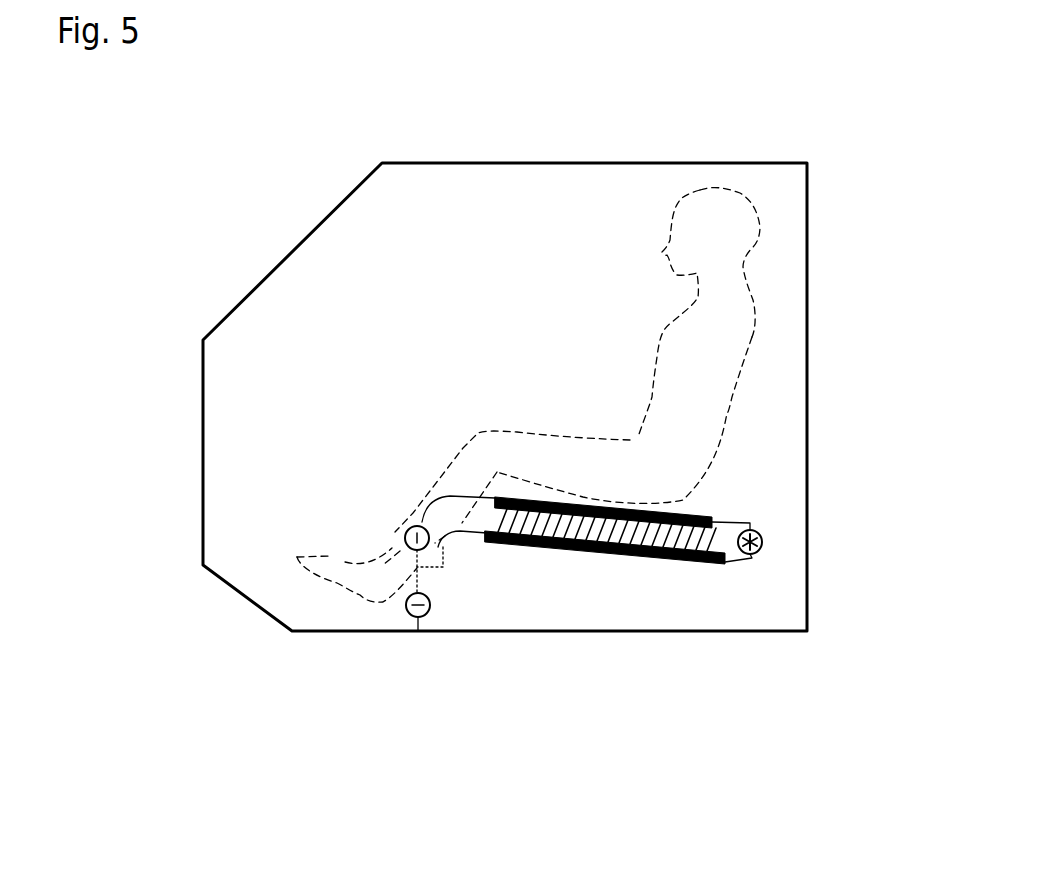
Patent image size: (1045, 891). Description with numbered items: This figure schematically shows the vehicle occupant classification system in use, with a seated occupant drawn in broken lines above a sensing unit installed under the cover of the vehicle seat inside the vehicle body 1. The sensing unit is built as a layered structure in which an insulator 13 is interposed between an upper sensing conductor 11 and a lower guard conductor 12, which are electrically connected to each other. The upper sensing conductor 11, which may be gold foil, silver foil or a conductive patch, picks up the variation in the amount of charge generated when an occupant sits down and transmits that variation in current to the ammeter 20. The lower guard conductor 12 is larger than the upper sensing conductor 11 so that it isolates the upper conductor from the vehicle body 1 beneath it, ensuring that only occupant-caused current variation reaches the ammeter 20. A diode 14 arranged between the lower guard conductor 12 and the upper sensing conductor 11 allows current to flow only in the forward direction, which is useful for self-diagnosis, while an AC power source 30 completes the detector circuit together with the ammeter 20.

The vehicle body 1 is at (285, 257).
The upper sensing conductor 11 is at (683, 497).
The lower guard conductor 12 is at (590, 555).
The insulator 13 is at (700, 541).
The diode 14 is at (762, 542).
The ammeter 20 is at (405, 538).
The AC power source 30 is at (410, 617).